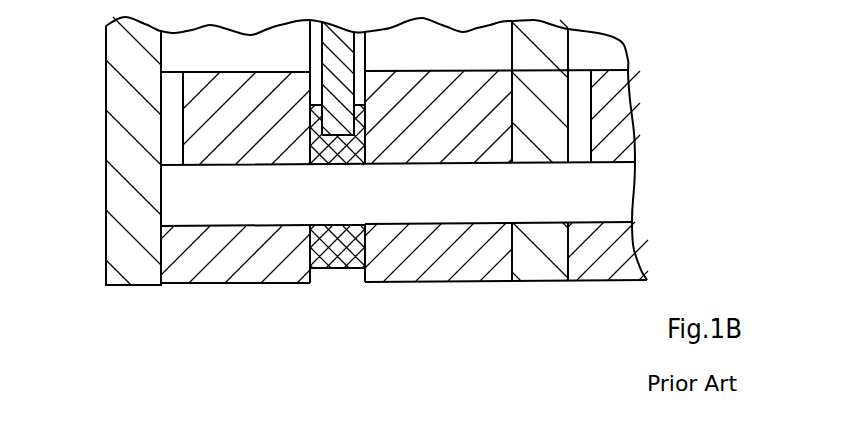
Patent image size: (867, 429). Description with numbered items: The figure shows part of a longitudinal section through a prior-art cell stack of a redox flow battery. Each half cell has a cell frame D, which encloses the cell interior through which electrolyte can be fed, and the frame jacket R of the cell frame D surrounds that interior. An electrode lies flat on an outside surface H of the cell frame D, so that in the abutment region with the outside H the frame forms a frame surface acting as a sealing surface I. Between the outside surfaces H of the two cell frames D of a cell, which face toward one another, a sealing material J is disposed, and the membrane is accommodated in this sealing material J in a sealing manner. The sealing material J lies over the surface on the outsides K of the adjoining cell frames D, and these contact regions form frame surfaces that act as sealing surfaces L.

The sealing surface I is at (155, 248).
The outside surface H is at (161, 271).
The cell frame D is at (261, 265).
The frame jacket R is at (237, 283).
The outside K is at (312, 272).
The sealing material J is at (337, 262).
The sealing surface L is at (322, 225).